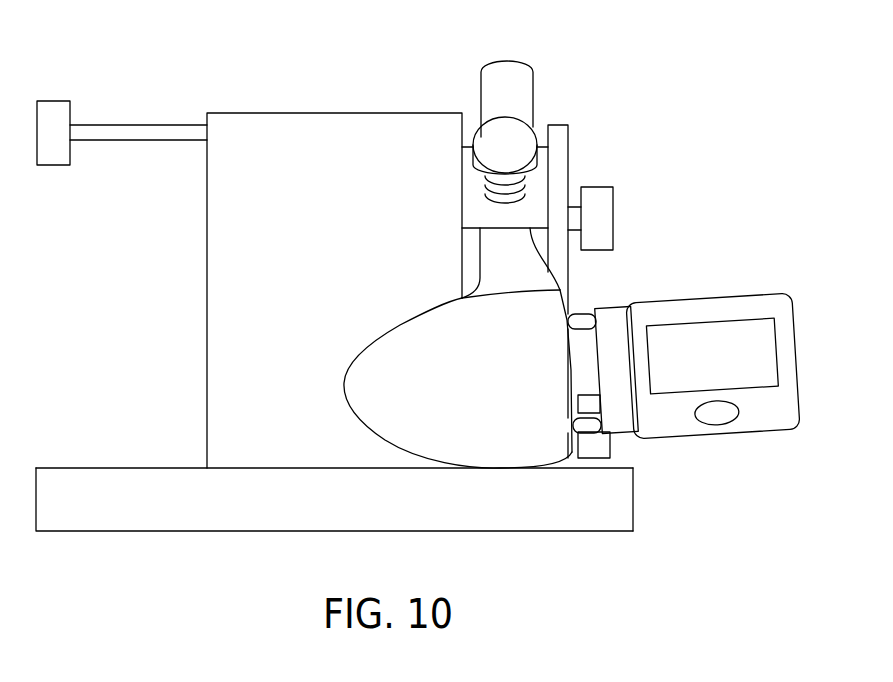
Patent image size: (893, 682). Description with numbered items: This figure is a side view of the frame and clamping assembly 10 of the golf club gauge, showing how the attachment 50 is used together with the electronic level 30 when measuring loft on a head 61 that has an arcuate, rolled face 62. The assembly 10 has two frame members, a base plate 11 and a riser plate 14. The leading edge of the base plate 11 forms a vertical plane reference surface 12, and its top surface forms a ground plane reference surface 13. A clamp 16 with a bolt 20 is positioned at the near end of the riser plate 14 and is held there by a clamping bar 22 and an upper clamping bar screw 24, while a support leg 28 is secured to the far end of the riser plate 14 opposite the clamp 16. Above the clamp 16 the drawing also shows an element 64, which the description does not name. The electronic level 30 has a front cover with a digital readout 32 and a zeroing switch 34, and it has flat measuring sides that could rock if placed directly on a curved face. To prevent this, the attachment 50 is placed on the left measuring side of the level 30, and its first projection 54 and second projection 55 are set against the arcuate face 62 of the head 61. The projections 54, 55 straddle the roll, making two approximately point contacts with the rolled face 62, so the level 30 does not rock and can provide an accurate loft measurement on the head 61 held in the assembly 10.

The frame and clamping assembly 10 is at (135, 73).
The base plate 11 is at (200, 507).
The vertical plane reference surface 12 is at (632, 483).
The ground plane reference surface 13 is at (125, 467).
The riser plate 14 is at (228, 206).
The clamp 16 is at (541, 183).
The bolt 20 is at (488, 151).
The clamping bar 22 is at (560, 138).
The upper clamping bar screw 24 is at (597, 205).
The support leg 28 is at (162, 134).
The electronic level 30 is at (682, 300).
The digital readout 32 is at (730, 363).
The zeroing switch 34 is at (727, 413).
The attachment 50 is at (617, 422).
The first projection 54 is at (585, 427).
The second projection 55 is at (577, 319).
The head 61 is at (452, 420).
The arcuate rolled face 62 is at (567, 370).
The plunger cylinder 64 is at (518, 92).